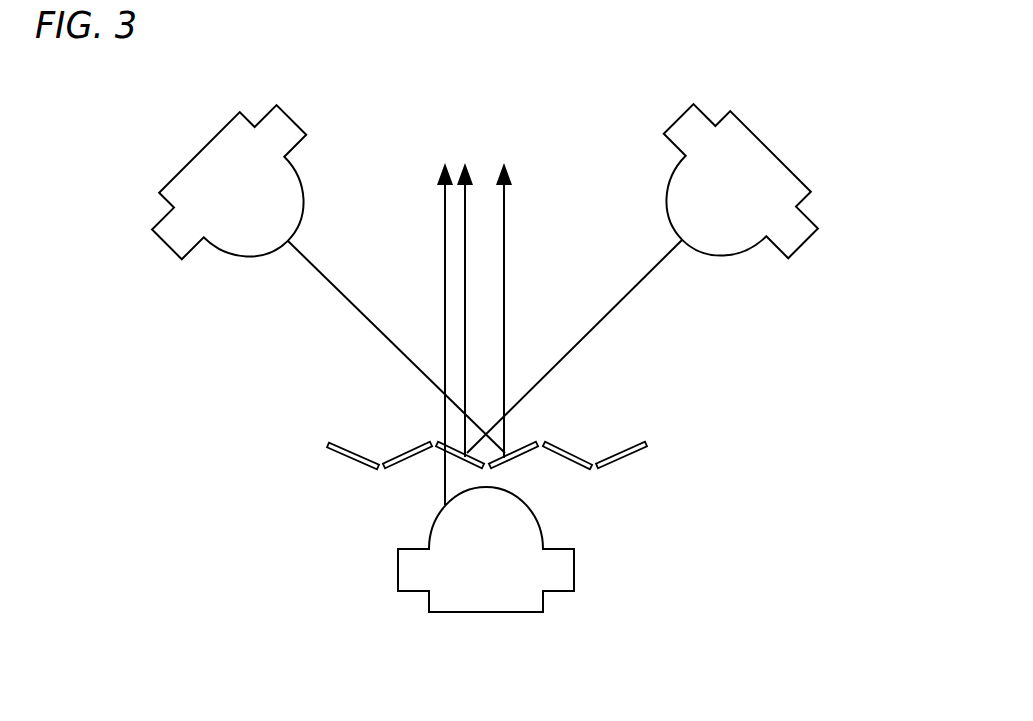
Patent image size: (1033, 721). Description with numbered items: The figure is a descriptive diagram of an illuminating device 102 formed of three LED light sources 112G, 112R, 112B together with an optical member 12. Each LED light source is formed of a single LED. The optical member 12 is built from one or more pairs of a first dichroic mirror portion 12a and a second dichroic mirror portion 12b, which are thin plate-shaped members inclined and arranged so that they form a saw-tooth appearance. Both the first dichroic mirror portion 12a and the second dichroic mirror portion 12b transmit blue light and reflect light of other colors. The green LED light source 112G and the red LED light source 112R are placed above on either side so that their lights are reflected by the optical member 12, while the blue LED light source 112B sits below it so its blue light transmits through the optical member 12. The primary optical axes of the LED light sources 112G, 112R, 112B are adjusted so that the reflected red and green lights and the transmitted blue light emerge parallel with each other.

The illuminating device 102 is at (876, 371).
The LED light source 112G is at (174, 163).
The LED light source 112R is at (829, 192).
The LED light source 112B is at (377, 570).
The optical member 12 is at (516, 431).
The first dichroic mirror portion 12a is at (401, 447).
The second dichroic mirror portion 12b is at (359, 449).